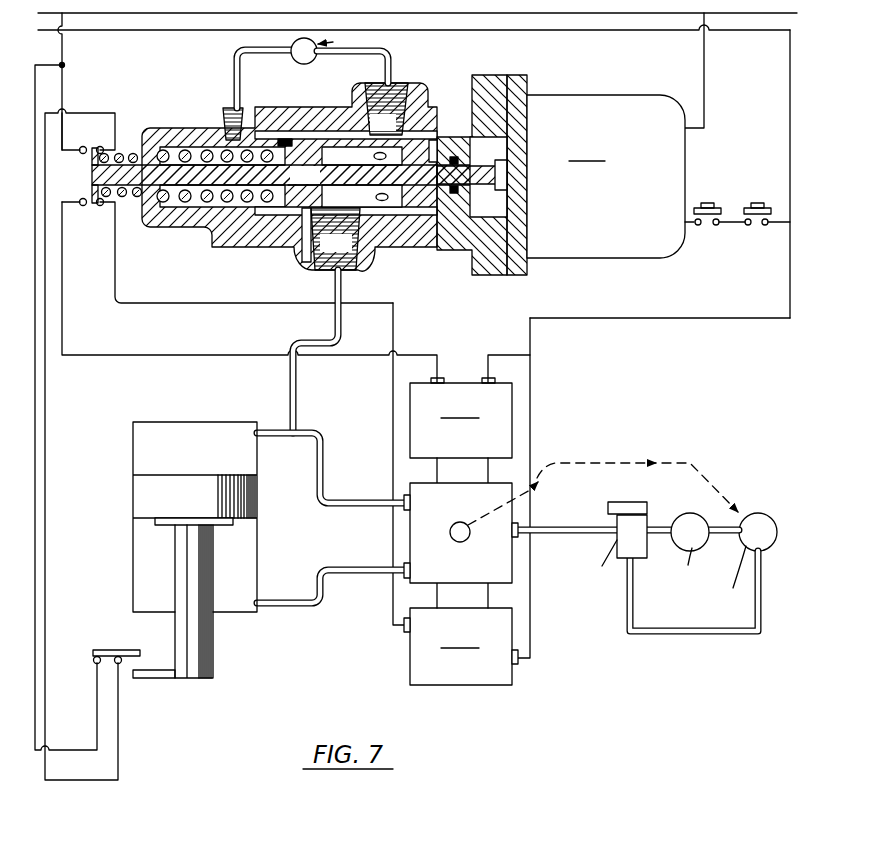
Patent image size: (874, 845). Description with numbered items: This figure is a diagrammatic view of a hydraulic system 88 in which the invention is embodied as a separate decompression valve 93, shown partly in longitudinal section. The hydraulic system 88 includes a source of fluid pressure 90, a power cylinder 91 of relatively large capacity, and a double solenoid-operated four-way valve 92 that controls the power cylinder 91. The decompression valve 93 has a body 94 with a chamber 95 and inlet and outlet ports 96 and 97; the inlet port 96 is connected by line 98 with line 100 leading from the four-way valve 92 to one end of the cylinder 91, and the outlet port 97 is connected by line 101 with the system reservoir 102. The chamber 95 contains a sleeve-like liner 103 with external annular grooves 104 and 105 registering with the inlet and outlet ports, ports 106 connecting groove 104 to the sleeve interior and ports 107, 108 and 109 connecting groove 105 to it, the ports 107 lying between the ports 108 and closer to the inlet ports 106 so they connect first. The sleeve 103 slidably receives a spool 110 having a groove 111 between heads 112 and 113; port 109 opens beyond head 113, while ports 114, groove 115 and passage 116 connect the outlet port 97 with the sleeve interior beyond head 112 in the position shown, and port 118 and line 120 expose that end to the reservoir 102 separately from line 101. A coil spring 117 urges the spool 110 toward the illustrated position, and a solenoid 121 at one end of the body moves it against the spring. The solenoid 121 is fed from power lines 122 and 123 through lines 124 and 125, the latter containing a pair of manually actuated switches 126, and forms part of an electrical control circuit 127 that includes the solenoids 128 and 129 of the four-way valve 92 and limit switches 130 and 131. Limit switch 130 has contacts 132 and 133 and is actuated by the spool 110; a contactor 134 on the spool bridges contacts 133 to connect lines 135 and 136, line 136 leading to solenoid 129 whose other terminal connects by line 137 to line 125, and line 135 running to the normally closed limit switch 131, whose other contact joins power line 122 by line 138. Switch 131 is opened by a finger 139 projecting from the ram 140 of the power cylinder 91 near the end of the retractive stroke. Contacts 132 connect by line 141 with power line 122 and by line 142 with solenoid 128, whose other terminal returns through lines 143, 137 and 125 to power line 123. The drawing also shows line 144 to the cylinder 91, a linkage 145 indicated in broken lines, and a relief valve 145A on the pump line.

The hydraulic system 88 is at (582, 527).
The source of fluid pressure 90 is at (698, 510).
The power cylinder 91 is at (262, 562).
The double solenoid-operated four-way valve 92 is at (519, 562).
The decompression valve 93 is at (213, 258).
The body 94 is at (328, 112).
The chamber 95 is at (388, 218).
The inlet port 96 is at (348, 275).
The outlet port 97 is at (400, 96).
The line 98 is at (296, 408).
The line 100 is at (322, 478).
The line 101 is at (392, 64).
The system reservoir 102 is at (293, 58).
The sleeve-like liner 103 is at (302, 250).
The external annular groove 104 is at (313, 268).
The external annular groove 105 is at (419, 222).
The ports 106 is at (335, 239).
The ports 107 is at (380, 162).
The ports 108 is at (394, 150).
The port 109 is at (436, 146).
The spool 110 is at (294, 174).
The groove 111 is at (383, 122).
The head 112 is at (285, 215).
The head 113 is at (438, 203).
The ports 114 is at (263, 206).
The groove 115 is at (265, 131).
The passage 116 is at (308, 131).
The coil spring 117 is at (207, 204).
The port 118 is at (223, 116).
The line 120 is at (236, 74).
The solenoid 121 is at (596, 175).
The power line 122 is at (632, 15).
The power line 123 is at (675, 31).
The line 124 is at (706, 86).
The line 125 is at (788, 132).
The manually actuated switches 126 is at (760, 228).
The electrical control circuit 127 is at (672, 315).
The solenoid 128 is at (461, 430).
The solenoid 129 is at (455, 494).
The limit switch 130 is at (90, 209).
The limit switch 131 is at (118, 648).
The contacts 132 is at (85, 188).
The contacts 133 is at (103, 147).
The contactor 134 is at (96, 145).
The line 135 is at (48, 452).
The line 136 is at (116, 302).
The line 137 is at (545, 488).
The line 138 is at (97, 727).
The finger 139 is at (160, 680).
The ram 140 is at (215, 655).
The line 141 is at (64, 80).
The line 142 is at (200, 356).
The line 143 is at (500, 355).
The cylinder line 144 is at (340, 588).
The linkage 145 is at (547, 478).
The relief valve 145A is at (648, 515).